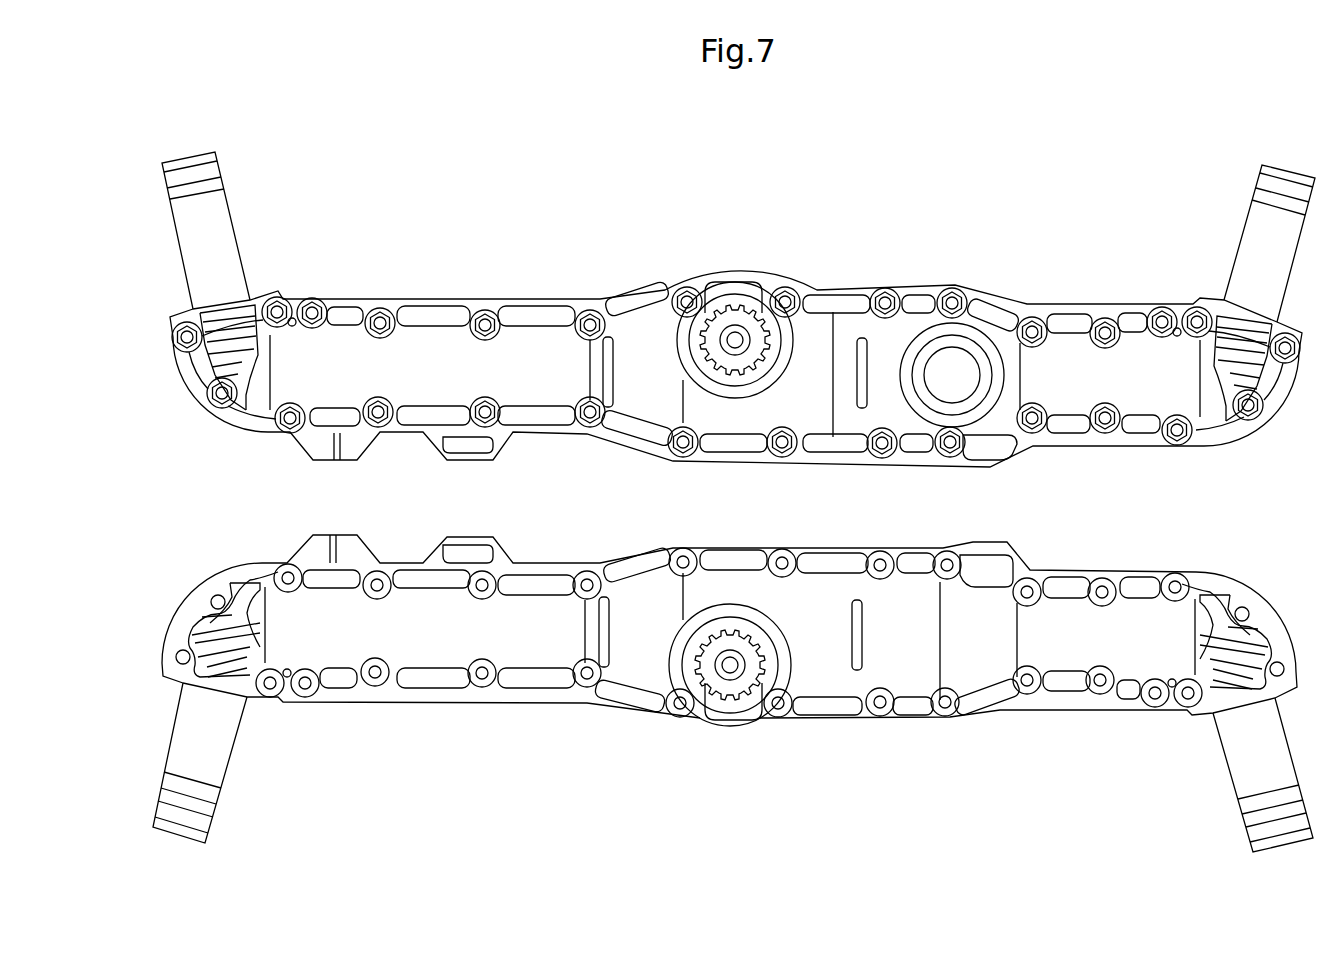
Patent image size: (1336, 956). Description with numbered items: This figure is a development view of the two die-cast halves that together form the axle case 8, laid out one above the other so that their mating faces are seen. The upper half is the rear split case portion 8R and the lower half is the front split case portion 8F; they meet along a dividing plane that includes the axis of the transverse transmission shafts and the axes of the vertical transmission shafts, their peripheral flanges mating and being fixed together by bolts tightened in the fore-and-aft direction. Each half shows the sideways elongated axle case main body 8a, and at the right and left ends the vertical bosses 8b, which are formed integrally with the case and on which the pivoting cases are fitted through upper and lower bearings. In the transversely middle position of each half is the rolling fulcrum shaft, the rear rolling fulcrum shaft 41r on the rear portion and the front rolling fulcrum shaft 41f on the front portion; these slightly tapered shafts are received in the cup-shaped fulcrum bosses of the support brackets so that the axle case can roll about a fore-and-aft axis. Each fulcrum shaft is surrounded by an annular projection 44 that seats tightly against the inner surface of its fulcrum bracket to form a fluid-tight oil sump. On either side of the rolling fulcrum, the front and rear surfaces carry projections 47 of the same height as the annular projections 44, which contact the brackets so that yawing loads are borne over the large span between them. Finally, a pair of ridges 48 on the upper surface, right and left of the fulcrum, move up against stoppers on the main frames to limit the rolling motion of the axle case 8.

The axle case 8 is at (1055, 192).
The rear split case portion 8R is at (848, 282).
The front split case portion 8F is at (519, 708).
The axle case main body 8a is at (530, 298).
The vertical boss 8b is at (226, 223).
The rear rolling fulcrum shaft 41r is at (744, 310).
The front rolling fulcrum shaft 41f is at (722, 700).
The annular projection 44 is at (682, 351).
The projection 47 is at (603, 372).
The ridge 48 is at (470, 540).